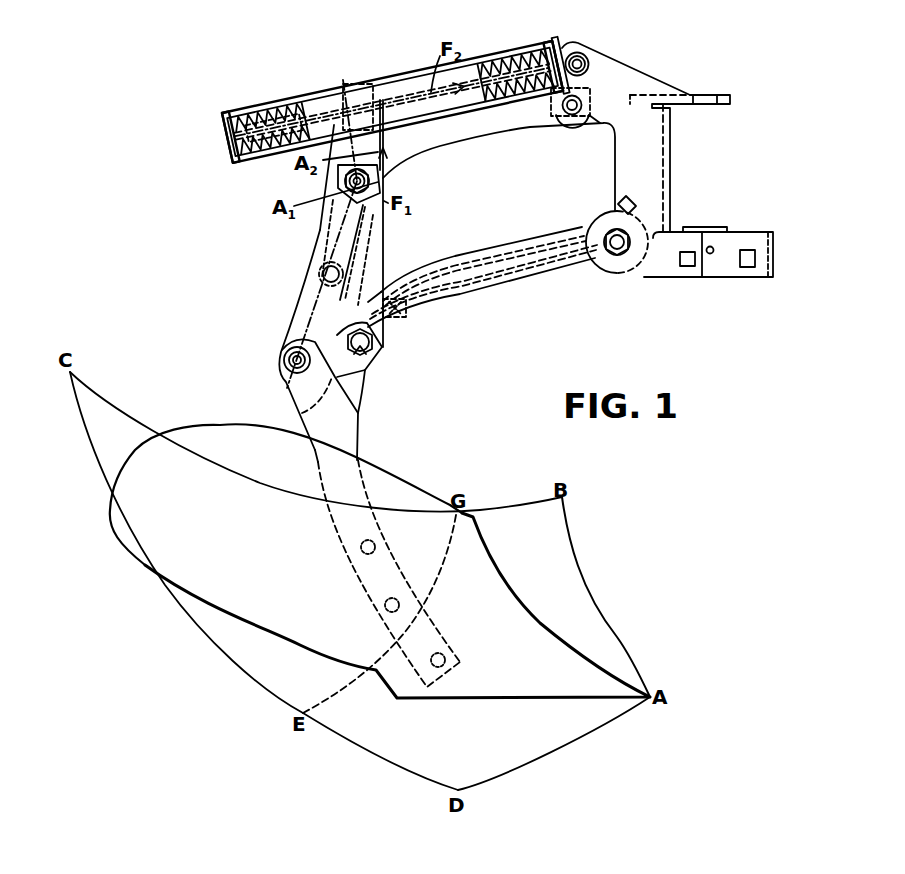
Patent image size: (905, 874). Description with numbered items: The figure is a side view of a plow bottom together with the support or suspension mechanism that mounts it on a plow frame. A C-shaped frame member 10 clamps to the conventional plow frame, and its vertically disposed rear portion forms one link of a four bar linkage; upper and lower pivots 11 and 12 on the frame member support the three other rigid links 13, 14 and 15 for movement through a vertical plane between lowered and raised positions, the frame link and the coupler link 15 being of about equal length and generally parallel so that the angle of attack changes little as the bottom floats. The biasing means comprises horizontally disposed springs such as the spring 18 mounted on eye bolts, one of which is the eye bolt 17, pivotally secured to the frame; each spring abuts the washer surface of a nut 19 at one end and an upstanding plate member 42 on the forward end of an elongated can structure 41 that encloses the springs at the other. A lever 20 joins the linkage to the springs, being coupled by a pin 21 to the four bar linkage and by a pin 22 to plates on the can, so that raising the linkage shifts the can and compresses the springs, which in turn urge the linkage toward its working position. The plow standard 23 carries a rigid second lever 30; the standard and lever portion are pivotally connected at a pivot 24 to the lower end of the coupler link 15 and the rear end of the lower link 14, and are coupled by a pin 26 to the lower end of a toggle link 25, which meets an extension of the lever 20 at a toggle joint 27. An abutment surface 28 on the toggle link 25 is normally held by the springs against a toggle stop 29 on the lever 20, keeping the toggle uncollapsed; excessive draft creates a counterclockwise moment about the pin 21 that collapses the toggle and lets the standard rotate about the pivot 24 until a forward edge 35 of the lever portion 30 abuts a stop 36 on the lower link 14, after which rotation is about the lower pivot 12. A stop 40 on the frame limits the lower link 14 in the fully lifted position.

The C-shaped frame member 10 is at (633, 72).
The upper pivot 11 is at (578, 120).
The lower pivot 12 is at (610, 233).
The upper link 13 is at (502, 127).
The lower link 14 is at (538, 264).
The coupler link 15 is at (380, 238).
The eye bolt 17 is at (560, 48).
The spring 18 is at (509, 62).
The nut 19 is at (224, 155).
The lever 20 is at (336, 185).
The pin 21 is at (382, 178).
The pin 22 is at (363, 86).
The plow standard 23 is at (355, 432).
The pivot 24 is at (382, 348).
The toggle link 25 is at (312, 293).
The pin 26 is at (289, 361).
The toggle joint 27 is at (325, 274).
The abutment surface 28 is at (332, 247).
The toggle stop 29 is at (342, 228).
The second lever 30 is at (318, 326).
The forward edge 35 is at (378, 284).
The stop 36 is at (408, 317).
The stop 40 is at (628, 198).
The can structure 41 is at (393, 80).
The plate member 42 is at (584, 82).